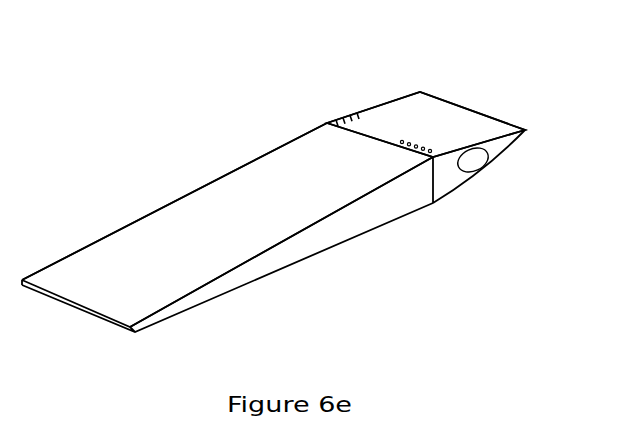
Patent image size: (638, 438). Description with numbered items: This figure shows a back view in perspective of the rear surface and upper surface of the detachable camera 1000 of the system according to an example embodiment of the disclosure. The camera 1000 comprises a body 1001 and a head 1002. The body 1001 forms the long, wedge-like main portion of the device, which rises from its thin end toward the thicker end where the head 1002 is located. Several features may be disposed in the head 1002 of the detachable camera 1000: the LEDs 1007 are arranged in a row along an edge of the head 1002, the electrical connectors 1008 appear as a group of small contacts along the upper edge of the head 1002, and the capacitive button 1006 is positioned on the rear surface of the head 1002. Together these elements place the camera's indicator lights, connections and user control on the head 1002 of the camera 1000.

The camera 1000 is at (193, 165).
The body 1001 is at (97, 253).
The head 1002 is at (420, 93).
The capacitive button 1006 is at (472, 167).
The LEDs 1007 is at (425, 140).
The electrical connectors 1008 is at (343, 107).